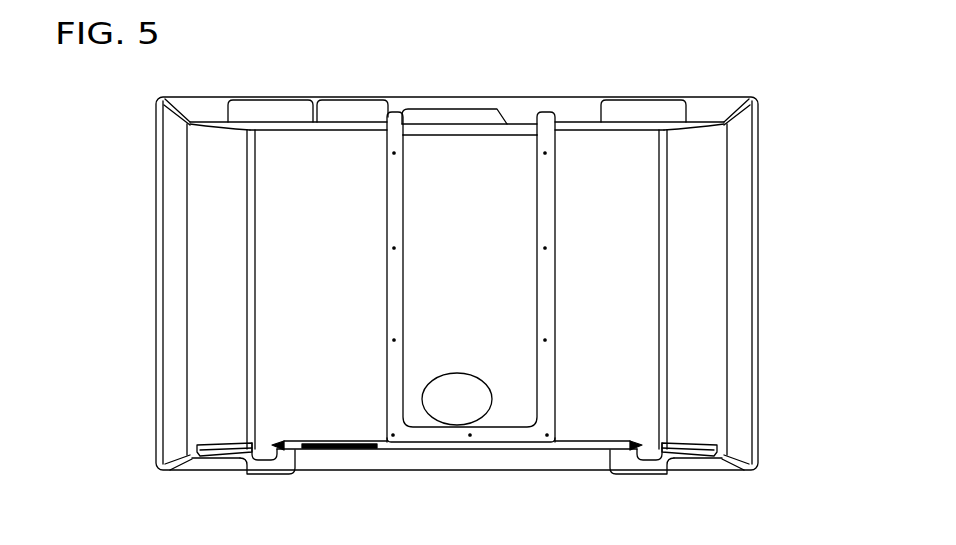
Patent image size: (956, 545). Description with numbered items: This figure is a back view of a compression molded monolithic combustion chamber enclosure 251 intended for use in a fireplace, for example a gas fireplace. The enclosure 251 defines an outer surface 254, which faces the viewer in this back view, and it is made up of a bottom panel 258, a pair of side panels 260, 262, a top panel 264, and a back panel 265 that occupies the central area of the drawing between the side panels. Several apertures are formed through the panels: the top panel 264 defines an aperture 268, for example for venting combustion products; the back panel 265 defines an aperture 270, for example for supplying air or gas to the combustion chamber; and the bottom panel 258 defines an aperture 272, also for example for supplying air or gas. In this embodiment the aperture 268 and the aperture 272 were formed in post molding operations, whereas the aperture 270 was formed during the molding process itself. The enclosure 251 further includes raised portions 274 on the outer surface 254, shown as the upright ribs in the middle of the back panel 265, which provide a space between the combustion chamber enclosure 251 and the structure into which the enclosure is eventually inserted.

The combustion chamber enclosure 251 is at (774, 61).
The outer surface 254 is at (198, 190).
The bottom panel 258 is at (531, 470).
The side panel 260 is at (190, 310).
The side panel 262 is at (710, 340).
The top panel 264 is at (335, 122).
The back panel 265 is at (615, 172).
The aperture 268 is at (455, 110).
The aperture 270 is at (450, 404).
The aperture 272 is at (325, 449).
The raised portions 274 is at (549, 112).